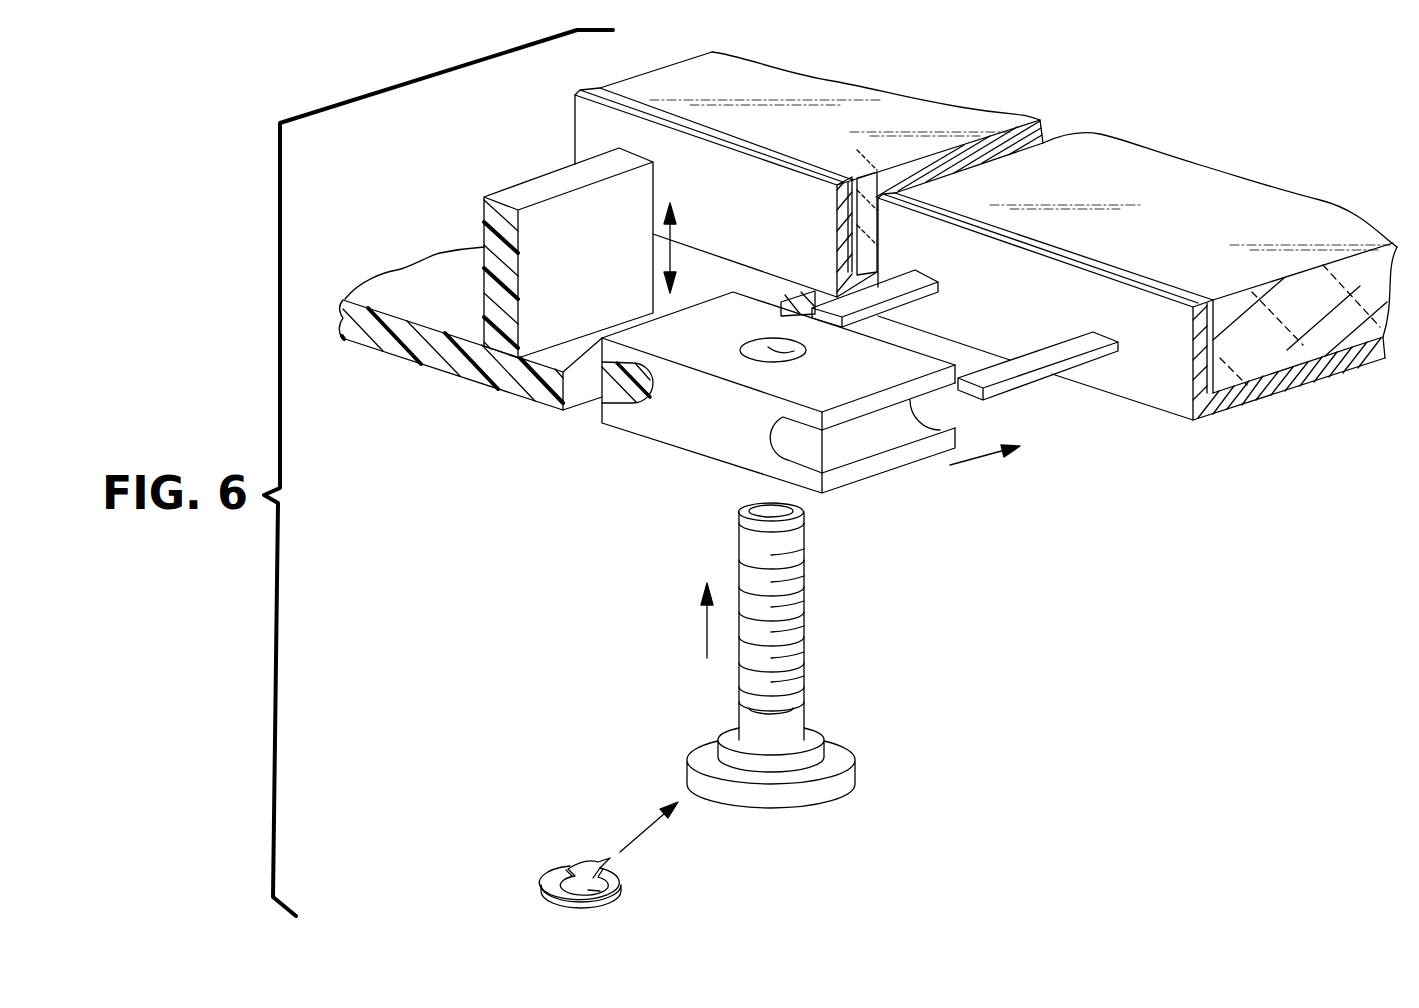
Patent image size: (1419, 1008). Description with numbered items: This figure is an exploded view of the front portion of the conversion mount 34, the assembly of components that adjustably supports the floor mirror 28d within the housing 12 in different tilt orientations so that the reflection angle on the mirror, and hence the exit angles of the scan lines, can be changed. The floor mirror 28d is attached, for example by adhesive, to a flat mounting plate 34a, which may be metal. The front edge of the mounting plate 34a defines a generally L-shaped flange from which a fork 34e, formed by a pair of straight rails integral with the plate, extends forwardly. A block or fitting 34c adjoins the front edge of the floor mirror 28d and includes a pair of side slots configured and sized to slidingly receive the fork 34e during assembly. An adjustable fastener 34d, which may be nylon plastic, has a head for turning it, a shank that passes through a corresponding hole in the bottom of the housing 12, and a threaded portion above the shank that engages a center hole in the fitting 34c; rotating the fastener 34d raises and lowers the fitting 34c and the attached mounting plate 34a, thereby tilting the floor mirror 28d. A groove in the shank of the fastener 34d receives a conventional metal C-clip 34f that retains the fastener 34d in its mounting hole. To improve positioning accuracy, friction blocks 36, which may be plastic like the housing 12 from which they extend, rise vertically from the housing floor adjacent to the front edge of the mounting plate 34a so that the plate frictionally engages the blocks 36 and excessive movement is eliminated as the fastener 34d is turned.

The housing 12 is at (449, 375).
The floor mirror 28d is at (935, 107).
The conversion mount 34 is at (1110, 498).
The mounting plate 34a is at (1273, 393).
The fitting 34c is at (860, 482).
The fastener 34d is at (808, 640).
The fork 34e is at (1022, 378).
The C-clip 34f is at (577, 862).
The friction block 36 is at (530, 188).